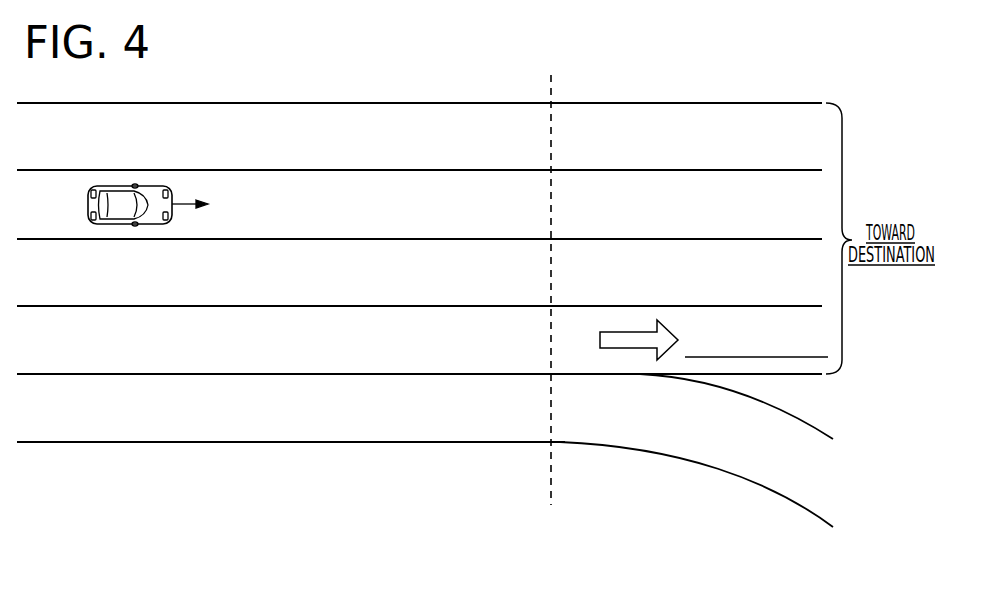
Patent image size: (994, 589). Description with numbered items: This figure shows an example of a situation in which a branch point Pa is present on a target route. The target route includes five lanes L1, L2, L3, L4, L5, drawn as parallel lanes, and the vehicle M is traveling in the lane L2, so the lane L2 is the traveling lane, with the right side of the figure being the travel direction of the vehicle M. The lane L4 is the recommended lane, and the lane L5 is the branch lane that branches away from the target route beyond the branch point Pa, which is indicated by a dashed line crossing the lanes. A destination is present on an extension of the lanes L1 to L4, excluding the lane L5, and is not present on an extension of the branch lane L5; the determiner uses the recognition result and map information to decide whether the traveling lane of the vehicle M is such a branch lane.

The lane L1 is at (55, 152).
The lane L2 is at (55, 219).
The lane L3 is at (55, 287).
The lane L4 is at (55, 354).
The lane L5 is at (55, 422).
The vehicle M is at (126, 224).
The branch point Pa is at (550, 310).